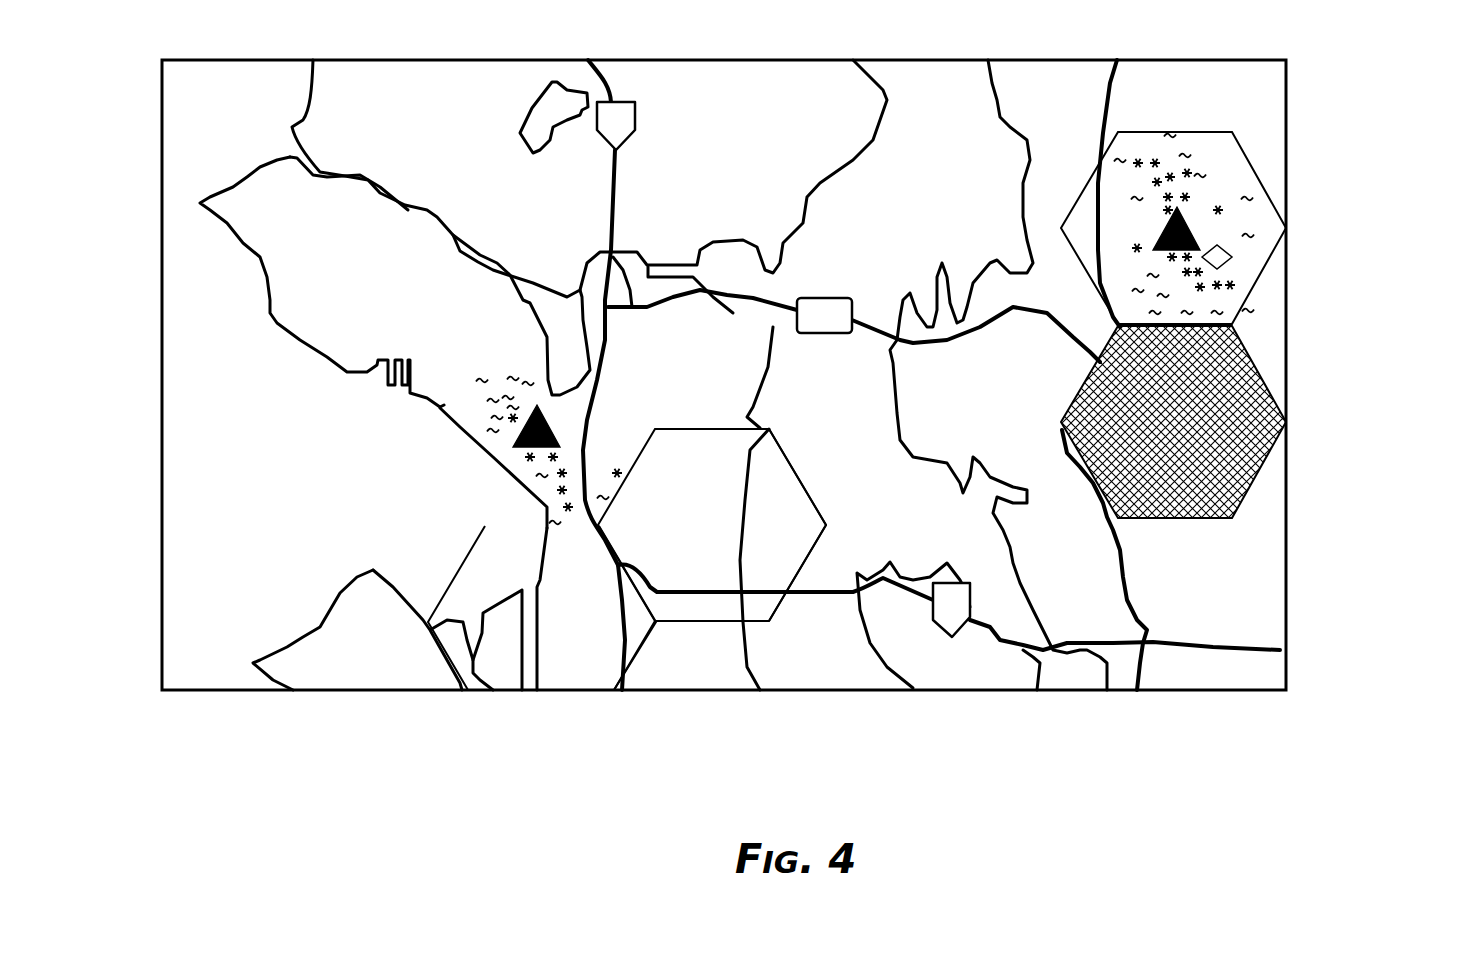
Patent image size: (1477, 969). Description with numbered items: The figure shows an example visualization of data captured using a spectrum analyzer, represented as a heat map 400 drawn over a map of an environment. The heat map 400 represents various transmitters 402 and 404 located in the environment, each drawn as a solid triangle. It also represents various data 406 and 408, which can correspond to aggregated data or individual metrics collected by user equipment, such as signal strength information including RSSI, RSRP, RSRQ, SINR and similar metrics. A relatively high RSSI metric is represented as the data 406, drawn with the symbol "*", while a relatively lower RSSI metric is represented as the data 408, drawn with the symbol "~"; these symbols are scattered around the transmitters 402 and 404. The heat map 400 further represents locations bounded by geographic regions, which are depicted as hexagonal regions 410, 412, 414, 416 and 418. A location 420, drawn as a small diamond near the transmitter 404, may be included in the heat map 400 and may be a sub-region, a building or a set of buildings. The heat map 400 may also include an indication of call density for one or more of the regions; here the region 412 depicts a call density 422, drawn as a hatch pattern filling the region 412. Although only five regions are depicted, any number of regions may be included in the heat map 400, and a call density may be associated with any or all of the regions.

The heat map 400 is at (157, 76).
The transmitter 402 is at (560, 413).
The transmitter 404 is at (1195, 212).
The data 406 is at (1242, 286).
The data 408 is at (1247, 352).
The region 410 is at (1270, 264).
The region 412 is at (1247, 503).
The region 414 is at (812, 499).
The region 416 is at (626, 485).
The region 418 is at (642, 660).
The location 420 is at (1235, 242).
The call density 422 is at (1155, 495).